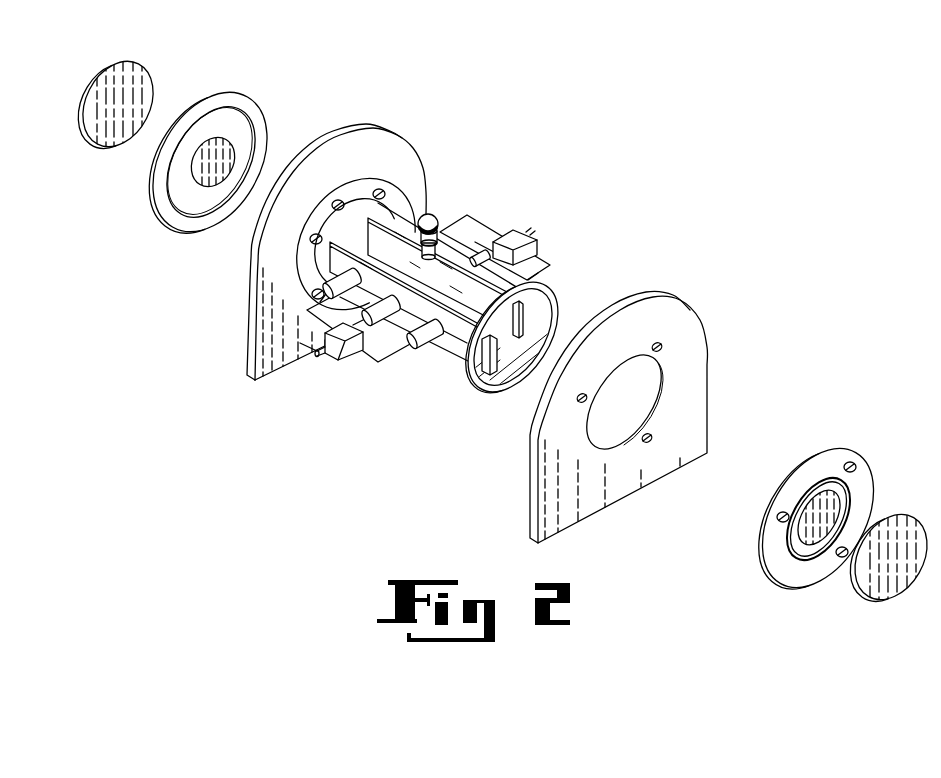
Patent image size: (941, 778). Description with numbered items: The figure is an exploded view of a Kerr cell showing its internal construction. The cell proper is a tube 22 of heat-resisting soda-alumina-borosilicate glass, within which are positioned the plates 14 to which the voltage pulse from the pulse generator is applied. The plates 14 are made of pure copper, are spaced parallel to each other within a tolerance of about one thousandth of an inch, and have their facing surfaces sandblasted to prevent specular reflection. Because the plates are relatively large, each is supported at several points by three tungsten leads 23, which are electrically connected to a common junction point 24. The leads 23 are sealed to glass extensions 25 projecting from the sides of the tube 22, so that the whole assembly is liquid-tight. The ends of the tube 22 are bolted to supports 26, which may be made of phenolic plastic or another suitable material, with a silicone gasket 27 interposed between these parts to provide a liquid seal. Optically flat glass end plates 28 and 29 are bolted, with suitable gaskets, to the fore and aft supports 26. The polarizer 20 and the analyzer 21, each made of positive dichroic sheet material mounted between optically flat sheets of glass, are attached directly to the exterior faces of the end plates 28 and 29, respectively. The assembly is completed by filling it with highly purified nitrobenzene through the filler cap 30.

The plates 14 is at (523, 325).
The polarizer 20 is at (863, 590).
The analyzer 21 is at (143, 66).
The tube 22 is at (465, 360).
The tungsten leads 23 is at (493, 249).
The common junction point 24 is at (338, 360).
The glass extensions 25 is at (421, 347).
The supports 26 is at (380, 131).
The silicone gasket 27 is at (541, 299).
The glass end plate 28 is at (840, 503).
The glass end plate 29 is at (236, 144).
The filler cap 30 is at (436, 216).